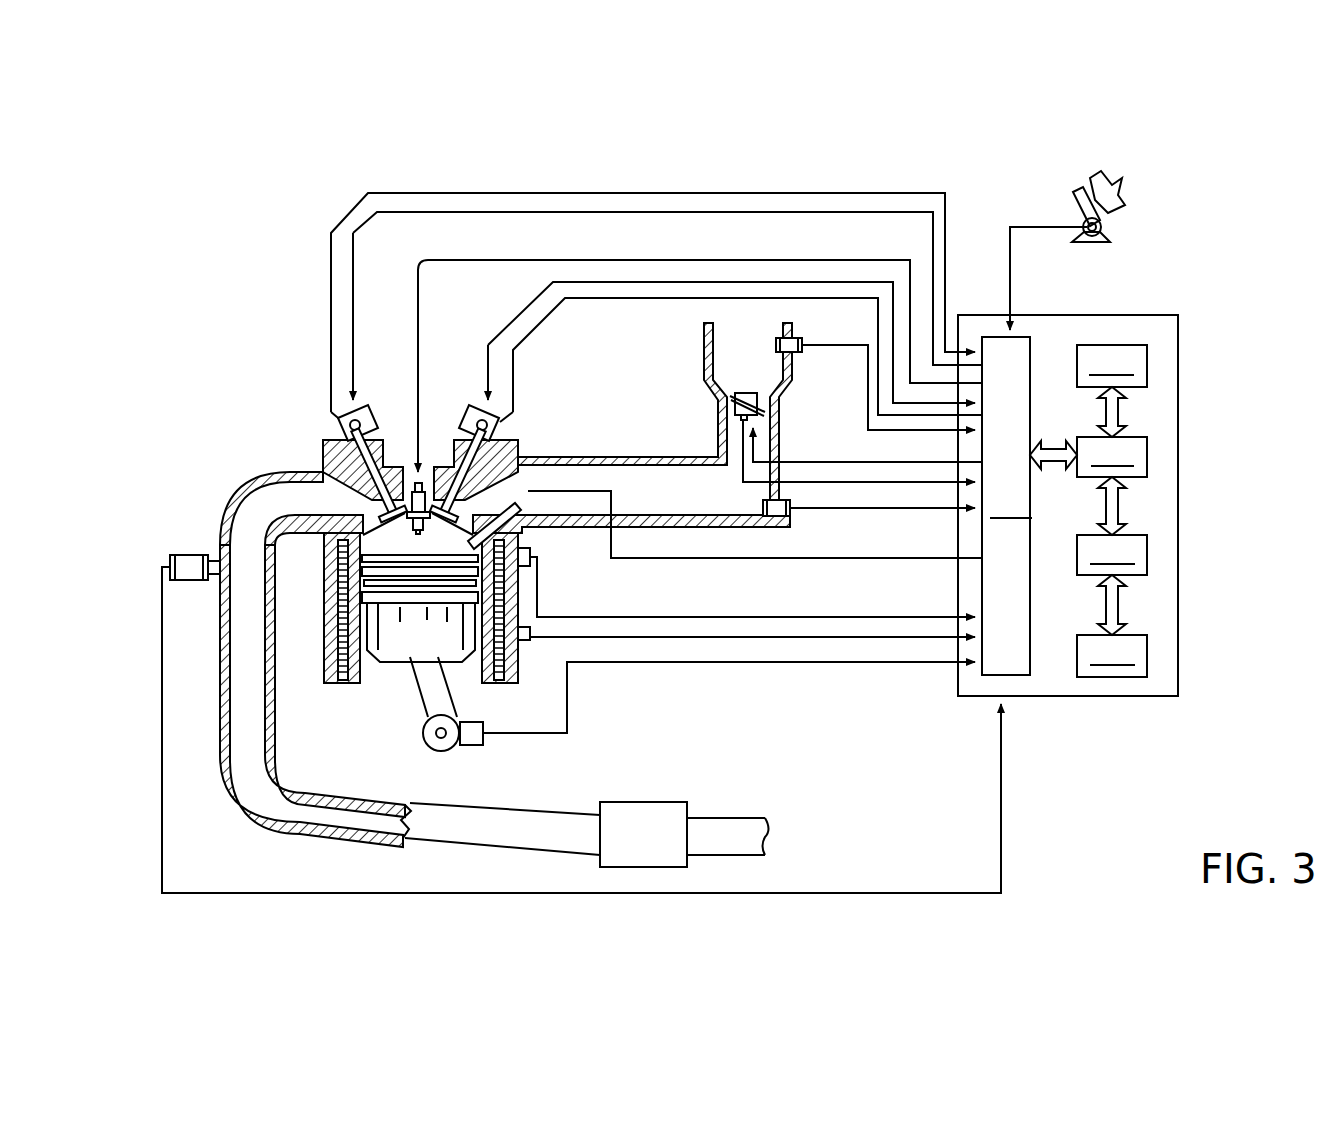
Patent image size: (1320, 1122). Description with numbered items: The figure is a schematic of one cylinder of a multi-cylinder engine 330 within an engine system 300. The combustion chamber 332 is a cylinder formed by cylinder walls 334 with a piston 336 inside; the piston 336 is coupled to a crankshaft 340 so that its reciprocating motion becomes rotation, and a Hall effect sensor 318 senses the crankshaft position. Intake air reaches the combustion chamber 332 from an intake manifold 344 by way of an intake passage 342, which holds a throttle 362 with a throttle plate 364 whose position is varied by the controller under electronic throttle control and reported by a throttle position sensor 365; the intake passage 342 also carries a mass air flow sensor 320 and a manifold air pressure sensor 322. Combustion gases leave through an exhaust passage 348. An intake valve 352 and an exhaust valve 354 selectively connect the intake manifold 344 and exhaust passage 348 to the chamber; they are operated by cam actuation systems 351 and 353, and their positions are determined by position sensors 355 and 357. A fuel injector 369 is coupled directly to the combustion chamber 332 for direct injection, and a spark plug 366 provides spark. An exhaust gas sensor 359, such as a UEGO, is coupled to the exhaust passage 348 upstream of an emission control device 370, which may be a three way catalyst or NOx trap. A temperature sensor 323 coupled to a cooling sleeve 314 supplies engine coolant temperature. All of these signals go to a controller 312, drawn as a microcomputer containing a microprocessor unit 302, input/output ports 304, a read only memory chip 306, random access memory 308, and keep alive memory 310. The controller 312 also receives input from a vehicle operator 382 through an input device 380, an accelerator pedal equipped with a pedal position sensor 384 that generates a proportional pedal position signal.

The engine system 300 is at (1214, 122).
The microprocessor unit 302 is at (1147, 455).
The input/output ports 304 is at (1032, 348).
The read only memory chip 306 is at (1147, 363).
The random access memory 308 is at (1147, 556).
The keep alive memory 310 is at (1147, 658).
The controller 312 is at (1172, 316).
The cooling sleeve 314 is at (510, 678).
The Hall effect sensor 318 is at (478, 745).
The mass air flow sensor 320 is at (795, 338).
The manifold air pressure sensor 322 is at (785, 518).
The temperature sensor 323 is at (527, 560).
The engine 330 is at (256, 395).
The combustion chamber 332 is at (395, 537).
The cylinder walls 334 is at (368, 678).
The piston 336 is at (380, 634).
The crankshaft 340 is at (430, 748).
The intake passage 342 is at (767, 368).
The intake manifold 344 is at (682, 501).
The exhaust passage 348 is at (313, 508).
The cam actuation system 351 is at (478, 408).
The intake valve 352 is at (526, 500).
The cam actuation system 353 is at (365, 408).
The exhaust valve 354 is at (345, 495).
The position sensor 355 is at (500, 438).
The position sensor 357 is at (343, 425).
The exhaust gas sensor 359 is at (170, 558).
The throttle 362 is at (742, 420).
The throttle plate 364 is at (735, 400).
The throttle position sensor 365 is at (741, 418).
The spark plug 366 is at (421, 480).
The fuel injector 369 is at (513, 532).
The emission control device 370 is at (585, 834).
The input device 380 is at (1123, 244).
The vehicle operator 382 is at (1122, 190).
The pedal position sensor 384 is at (1110, 232).